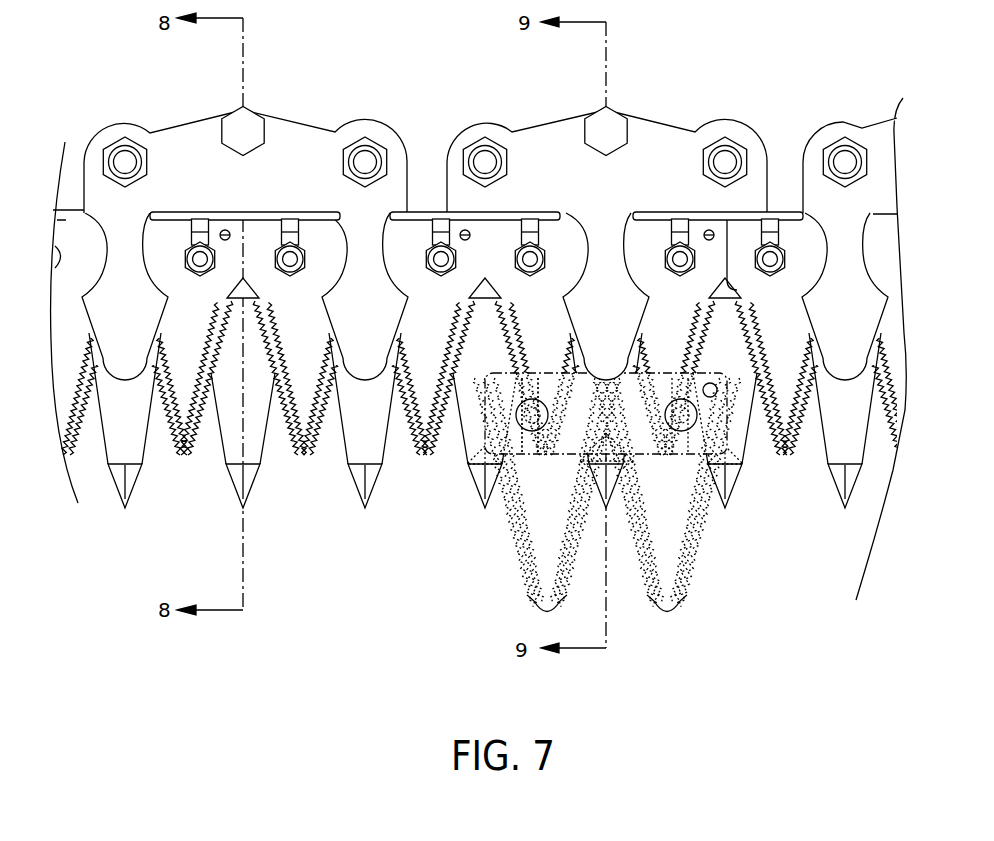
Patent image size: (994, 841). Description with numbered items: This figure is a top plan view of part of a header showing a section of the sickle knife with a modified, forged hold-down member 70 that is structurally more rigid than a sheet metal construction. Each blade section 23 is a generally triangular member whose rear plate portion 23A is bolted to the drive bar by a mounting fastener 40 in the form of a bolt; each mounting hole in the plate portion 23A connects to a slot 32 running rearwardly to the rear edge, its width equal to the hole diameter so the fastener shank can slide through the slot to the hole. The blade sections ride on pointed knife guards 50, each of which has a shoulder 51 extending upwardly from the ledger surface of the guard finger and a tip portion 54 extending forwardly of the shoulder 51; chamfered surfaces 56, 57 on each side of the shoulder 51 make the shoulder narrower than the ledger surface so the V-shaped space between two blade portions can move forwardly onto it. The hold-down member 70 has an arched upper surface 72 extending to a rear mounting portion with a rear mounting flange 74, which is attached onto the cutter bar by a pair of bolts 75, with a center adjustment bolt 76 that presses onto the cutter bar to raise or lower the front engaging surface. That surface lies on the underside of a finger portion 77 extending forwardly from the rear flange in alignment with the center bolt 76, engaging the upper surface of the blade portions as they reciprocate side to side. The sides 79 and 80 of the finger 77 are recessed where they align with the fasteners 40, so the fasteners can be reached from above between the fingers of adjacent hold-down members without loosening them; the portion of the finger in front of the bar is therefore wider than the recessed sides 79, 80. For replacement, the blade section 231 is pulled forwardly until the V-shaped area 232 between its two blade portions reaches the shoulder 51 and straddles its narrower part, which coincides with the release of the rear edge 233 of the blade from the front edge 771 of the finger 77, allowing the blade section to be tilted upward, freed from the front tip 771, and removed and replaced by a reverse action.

The hold-down member 70 is at (343, 118).
The rear mounting flange 74 is at (663, 120).
The bolts 75 is at (728, 157).
The center adjustment bolt 76 is at (588, 112).
The slot 32 is at (192, 255).
The rear plate portion 23A is at (285, 256).
The mounting fastener 40 is at (432, 258).
The side of the finger 79 is at (562, 212).
The arched upper surface 72 is at (598, 257).
The side of the finger 80 is at (633, 205).
The finger portion 77 is at (629, 308).
The front edge 771 is at (605, 368).
The rear edge 233 is at (545, 368).
The V-shaped area 232 is at (621, 438).
The blade section 231 is at (670, 523).
The chamfered surface 57 is at (521, 470).
The chamfered surface 56 is at (468, 473).
The tip portion 54 is at (737, 487).
The knife guard 50 is at (375, 450).
The shoulder 51 is at (143, 465).
The blade section 23 is at (303, 462).